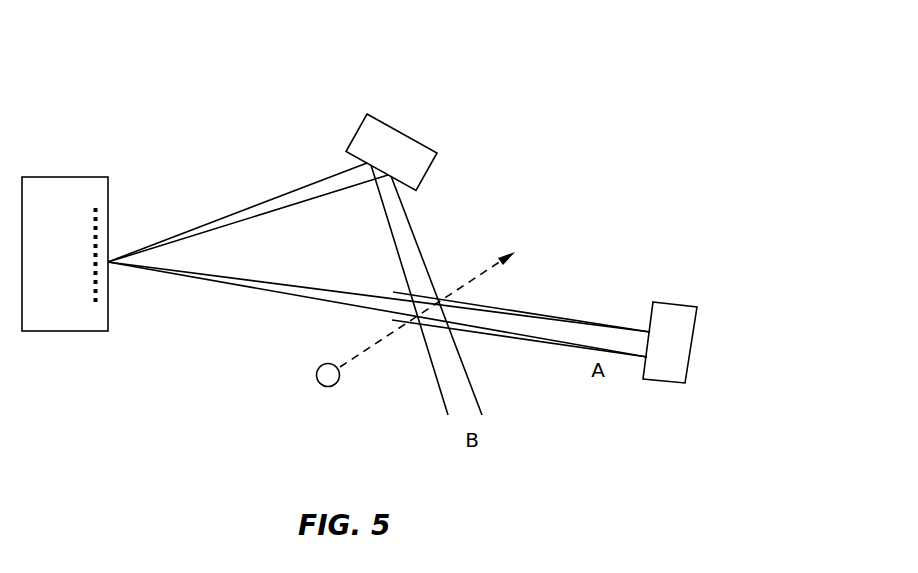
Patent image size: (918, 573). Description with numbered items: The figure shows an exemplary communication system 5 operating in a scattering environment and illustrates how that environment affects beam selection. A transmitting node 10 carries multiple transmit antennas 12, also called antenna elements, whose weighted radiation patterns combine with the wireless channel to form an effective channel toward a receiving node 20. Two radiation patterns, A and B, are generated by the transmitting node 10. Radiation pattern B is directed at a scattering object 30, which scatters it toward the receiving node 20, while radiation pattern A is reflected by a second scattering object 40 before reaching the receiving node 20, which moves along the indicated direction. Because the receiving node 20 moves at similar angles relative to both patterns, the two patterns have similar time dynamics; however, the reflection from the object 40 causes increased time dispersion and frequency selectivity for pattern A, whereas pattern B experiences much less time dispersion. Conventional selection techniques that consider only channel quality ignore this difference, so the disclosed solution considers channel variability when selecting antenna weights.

The communication system 5 is at (560, 58).
The transmitting node 10 is at (43, 260).
The transmit antennas 12 is at (98, 236).
The receiving node 20 is at (322, 385).
The scattering object 30 is at (412, 140).
The scattering object 40 is at (695, 327).